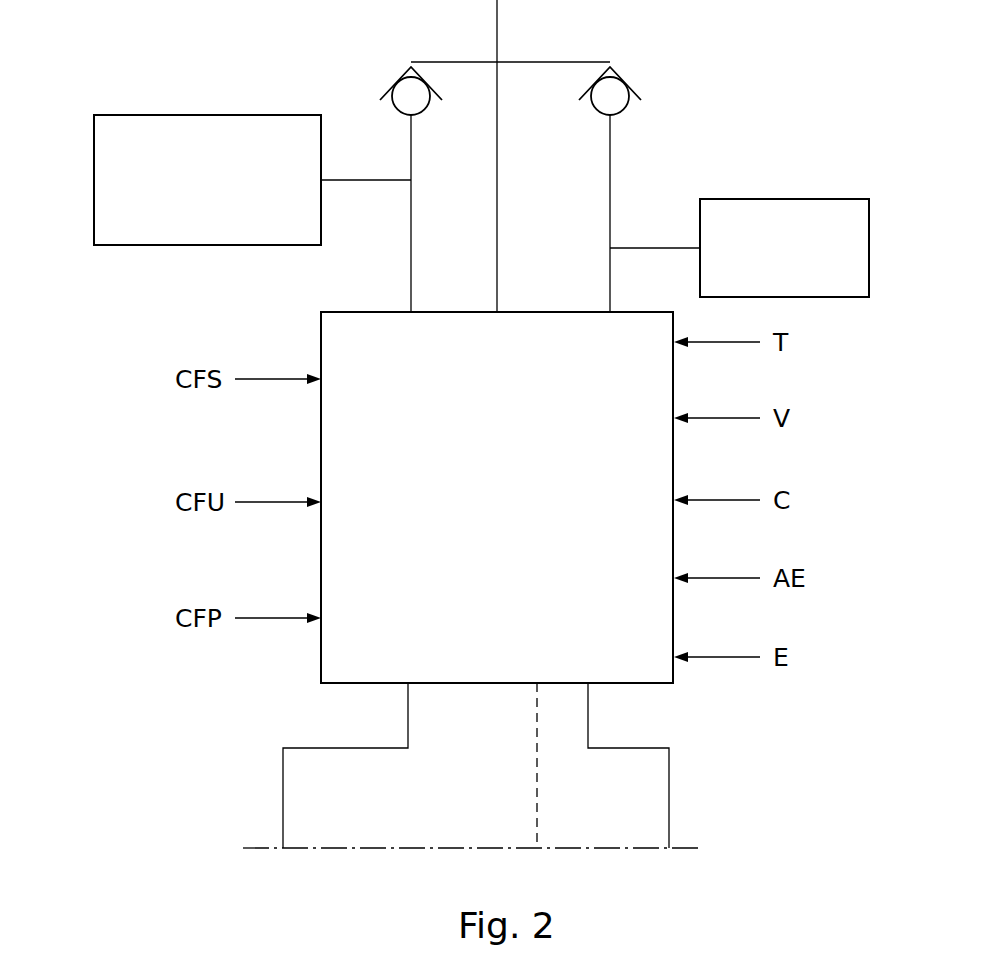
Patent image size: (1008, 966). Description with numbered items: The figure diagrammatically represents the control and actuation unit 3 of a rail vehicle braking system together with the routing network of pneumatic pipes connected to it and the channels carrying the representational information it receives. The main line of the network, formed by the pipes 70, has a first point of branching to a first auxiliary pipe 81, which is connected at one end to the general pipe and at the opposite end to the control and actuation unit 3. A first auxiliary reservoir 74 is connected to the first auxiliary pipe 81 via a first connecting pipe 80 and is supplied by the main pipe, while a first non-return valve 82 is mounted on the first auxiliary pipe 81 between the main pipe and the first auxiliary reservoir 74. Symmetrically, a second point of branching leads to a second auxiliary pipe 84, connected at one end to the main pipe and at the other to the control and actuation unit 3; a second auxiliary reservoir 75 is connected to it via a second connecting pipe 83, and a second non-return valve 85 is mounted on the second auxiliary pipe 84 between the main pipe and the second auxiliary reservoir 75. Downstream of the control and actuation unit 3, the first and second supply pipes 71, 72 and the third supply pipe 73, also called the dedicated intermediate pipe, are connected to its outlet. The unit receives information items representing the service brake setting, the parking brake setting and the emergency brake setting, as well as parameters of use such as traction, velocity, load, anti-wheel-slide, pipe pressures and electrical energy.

The control and actuation unit 3 is at (116, 309).
The pipes 70 is at (497, 33).
The first supply pipe 71 is at (283, 793).
The second supply pipe 72 is at (669, 803).
The third supply pipe 73 is at (537, 767).
The first auxiliary reservoir 74 is at (207, 180).
The second auxiliary reservoir 75 is at (784, 248).
The first connecting pipe 80 is at (358, 181).
The first auxiliary pipe 81 is at (411, 233).
The first non-return valve 82 is at (402, 80).
The second connecting pipe 83 is at (653, 247).
The second auxiliary pipe 84 is at (610, 160).
The second non-return valve 85 is at (624, 84).